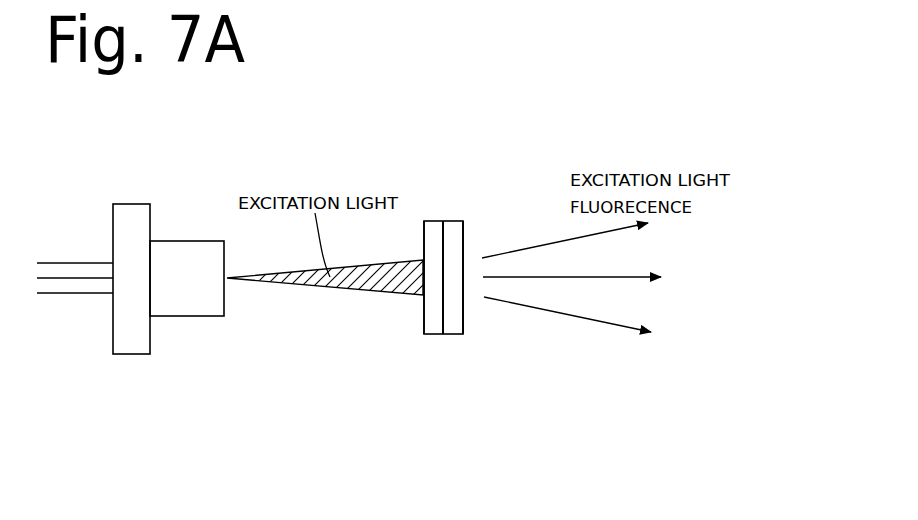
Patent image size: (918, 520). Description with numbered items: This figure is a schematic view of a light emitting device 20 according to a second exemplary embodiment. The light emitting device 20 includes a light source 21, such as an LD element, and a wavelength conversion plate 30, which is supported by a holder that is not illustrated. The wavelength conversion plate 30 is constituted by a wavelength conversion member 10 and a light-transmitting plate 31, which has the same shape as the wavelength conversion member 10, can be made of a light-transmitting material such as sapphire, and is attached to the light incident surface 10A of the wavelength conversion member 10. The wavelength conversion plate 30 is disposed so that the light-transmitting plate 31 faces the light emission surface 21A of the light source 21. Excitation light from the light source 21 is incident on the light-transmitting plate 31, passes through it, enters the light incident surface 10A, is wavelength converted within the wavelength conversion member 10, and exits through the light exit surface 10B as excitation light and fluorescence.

The light emitting device 20 is at (486, 152).
The light source 21 is at (133, 363).
The light emission surface 21A is at (231, 297).
The wavelength conversion plate 30 is at (473, 437).
The light-transmitting plate 31 is at (433, 322).
The wavelength conversion member 10 is at (454, 322).
The light incident surface 10A is at (438, 242).
The light exit surface 10B is at (466, 311).